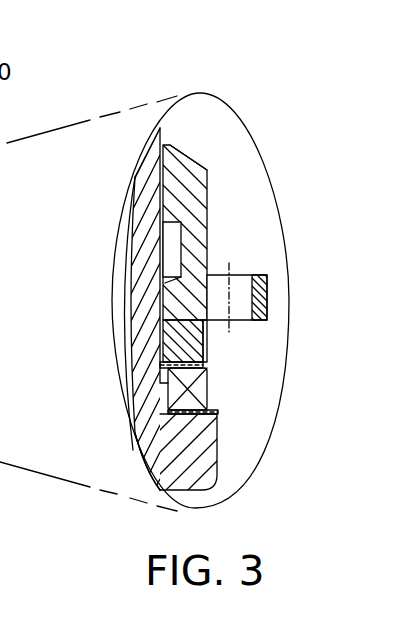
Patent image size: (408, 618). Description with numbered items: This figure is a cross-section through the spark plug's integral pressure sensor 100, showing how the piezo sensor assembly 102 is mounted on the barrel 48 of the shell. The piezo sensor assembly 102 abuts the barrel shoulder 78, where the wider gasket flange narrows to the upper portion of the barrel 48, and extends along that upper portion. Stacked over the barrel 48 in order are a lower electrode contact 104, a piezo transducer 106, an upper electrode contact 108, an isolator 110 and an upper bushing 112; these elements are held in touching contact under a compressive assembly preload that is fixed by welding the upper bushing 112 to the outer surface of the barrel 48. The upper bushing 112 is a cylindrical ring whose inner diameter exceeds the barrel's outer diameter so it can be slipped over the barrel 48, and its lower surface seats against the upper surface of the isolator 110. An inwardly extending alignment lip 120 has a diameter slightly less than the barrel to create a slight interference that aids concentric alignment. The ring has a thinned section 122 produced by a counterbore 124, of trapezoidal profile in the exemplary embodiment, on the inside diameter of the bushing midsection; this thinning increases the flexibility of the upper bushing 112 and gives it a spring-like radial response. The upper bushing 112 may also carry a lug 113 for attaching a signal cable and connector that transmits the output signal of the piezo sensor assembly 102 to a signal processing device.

The integral pressure sensor 100 is at (210, 80).
The barrel 48 is at (147, 240).
The counterbore 124 is at (170, 250).
The alignment lip 120 is at (167, 160).
The upper bushing 112 is at (205, 171).
The thinned section 122 is at (190, 242).
The piezo sensor assembly 102 is at (228, 238).
The lug 113 is at (255, 289).
The isolator 110 is at (207, 325).
The upper electrode contact 108 is at (207, 353).
The piezo transducer 106 is at (207, 391).
The lower electrode contact 104 is at (210, 416).
The barrel shoulder 78 is at (137, 444).